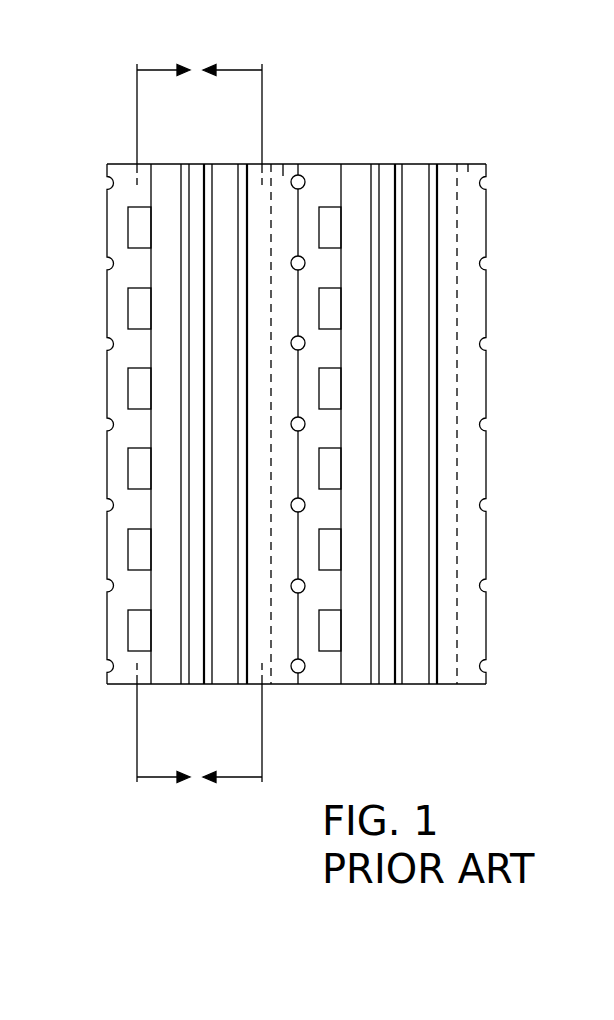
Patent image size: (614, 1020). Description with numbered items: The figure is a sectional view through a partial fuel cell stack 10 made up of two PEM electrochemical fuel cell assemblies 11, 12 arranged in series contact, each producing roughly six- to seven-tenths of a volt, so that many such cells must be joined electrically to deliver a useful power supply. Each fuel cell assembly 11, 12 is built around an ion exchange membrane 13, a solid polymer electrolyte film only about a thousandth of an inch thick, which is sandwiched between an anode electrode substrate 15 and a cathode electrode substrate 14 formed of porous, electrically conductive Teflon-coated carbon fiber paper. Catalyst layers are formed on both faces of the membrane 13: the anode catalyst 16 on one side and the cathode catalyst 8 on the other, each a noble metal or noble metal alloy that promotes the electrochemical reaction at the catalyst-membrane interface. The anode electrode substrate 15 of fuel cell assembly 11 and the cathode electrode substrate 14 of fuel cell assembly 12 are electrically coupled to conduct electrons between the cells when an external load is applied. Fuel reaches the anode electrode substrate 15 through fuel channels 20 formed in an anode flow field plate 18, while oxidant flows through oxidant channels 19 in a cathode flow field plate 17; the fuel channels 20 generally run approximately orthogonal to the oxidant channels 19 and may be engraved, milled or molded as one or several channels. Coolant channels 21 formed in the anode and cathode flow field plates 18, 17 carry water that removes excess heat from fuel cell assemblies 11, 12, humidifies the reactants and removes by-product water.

The cathode catalyst 8 is at (207, 164).
The partial fuel cell stack 10 is at (520, 603).
The electrochemical fuel cell assembly 11 is at (190, 700).
The electrochemical fuel cell assembly 12 is at (396, 720).
The ion exchange membrane 13 is at (200, 164).
The cathode electrode substrate 14 is at (227, 164).
The anode electrode substrate 15 is at (165, 177).
The anode catalyst 16 is at (185, 164).
The cathode flow field plate 17 is at (283, 164).
The anode flow field plate 18 is at (124, 163).
The oxidant channels 19 is at (262, 322).
The fuel channels 20 is at (141, 231).
The coolant channels 21 is at (299, 675).